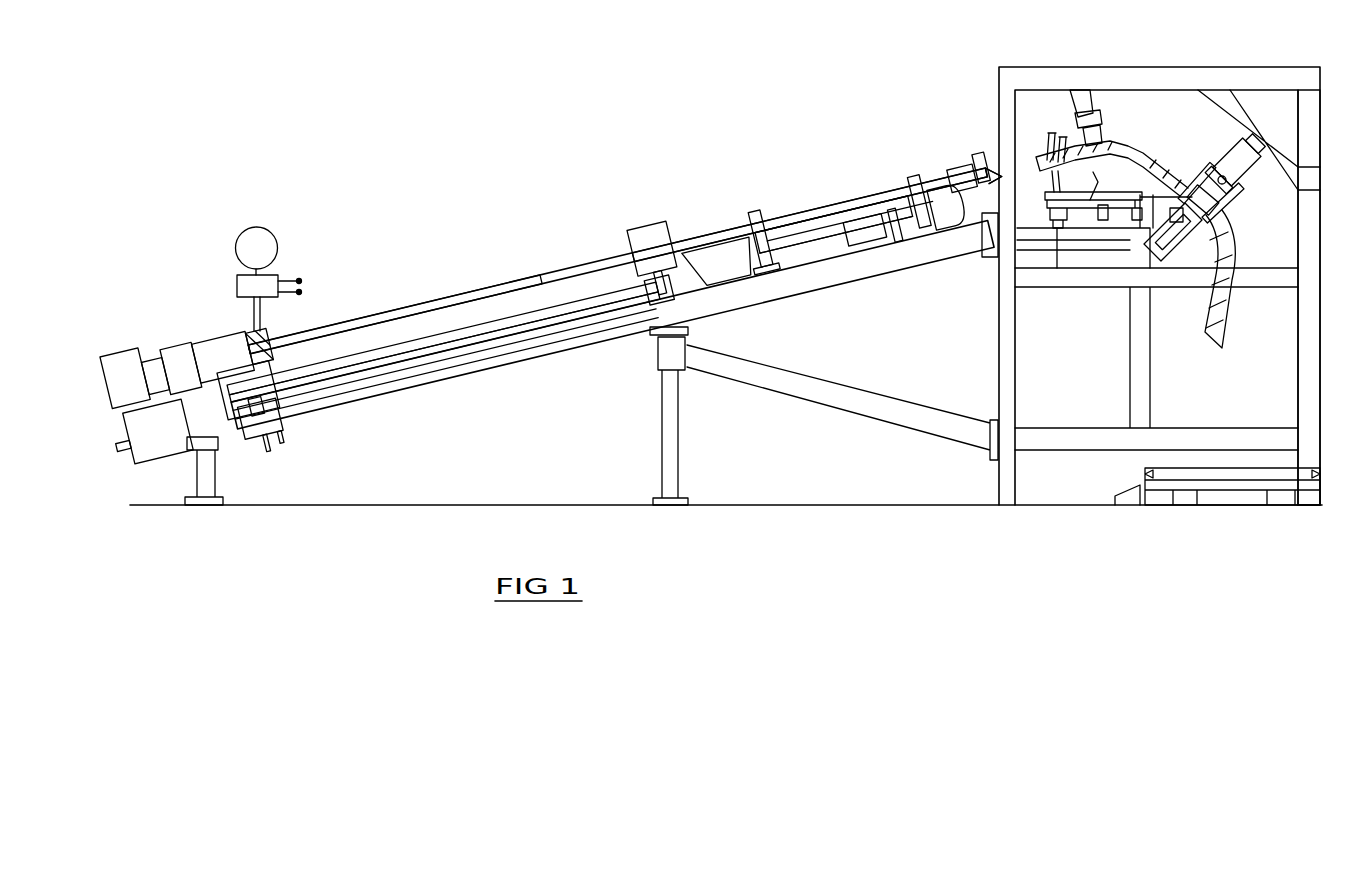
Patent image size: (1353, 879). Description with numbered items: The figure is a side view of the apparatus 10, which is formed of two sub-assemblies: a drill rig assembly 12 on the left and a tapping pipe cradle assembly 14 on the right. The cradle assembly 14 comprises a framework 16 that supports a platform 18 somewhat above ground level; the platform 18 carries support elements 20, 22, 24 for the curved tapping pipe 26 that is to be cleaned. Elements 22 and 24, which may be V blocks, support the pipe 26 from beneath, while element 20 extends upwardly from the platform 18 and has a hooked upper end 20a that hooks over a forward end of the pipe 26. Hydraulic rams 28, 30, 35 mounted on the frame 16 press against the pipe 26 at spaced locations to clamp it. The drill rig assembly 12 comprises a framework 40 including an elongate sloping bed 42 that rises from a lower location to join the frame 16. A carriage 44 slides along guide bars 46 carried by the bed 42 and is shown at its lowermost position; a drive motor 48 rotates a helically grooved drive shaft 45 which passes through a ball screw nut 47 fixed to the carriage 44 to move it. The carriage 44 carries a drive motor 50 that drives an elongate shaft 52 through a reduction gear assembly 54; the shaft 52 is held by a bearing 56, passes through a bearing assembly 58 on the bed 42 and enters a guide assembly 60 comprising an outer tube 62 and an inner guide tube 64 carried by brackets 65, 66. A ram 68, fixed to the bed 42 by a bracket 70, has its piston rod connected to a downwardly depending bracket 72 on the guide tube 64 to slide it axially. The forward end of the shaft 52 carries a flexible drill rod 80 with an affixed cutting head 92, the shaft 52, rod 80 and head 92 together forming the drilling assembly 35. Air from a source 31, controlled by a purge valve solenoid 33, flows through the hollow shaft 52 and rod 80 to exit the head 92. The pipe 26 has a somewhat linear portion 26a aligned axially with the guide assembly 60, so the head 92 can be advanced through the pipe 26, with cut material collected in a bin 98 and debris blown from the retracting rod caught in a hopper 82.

The apparatus 10 is at (651, 150).
The drill rig assembly 12 is at (385, 295).
The tapping pipe cradle assembly 14 is at (1323, 128).
The framework 16 is at (1312, 232).
The platform 18 is at (1090, 185).
The support element 20 is at (1040, 184).
The hooked upper end 20a is at (1036, 150).
The support element 22 is at (1128, 170).
The support element 24 is at (1172, 252).
The tapping pipe 26 is at (1222, 332).
The pipe portion 26a is at (1096, 178).
The hydraulic ram 28 is at (1085, 106).
The hydraulic ram 30 is at (1243, 158).
The source of air under pressure 31 is at (255, 226).
The purge valve solenoid 33 is at (236, 276).
The drilling assembly / hydraulic ram 35 is at (548, 266).
The framework 40 is at (775, 308).
The sloping bed 42 is at (717, 310).
The carriage 44 is at (268, 388).
The drive shaft 45 is at (385, 377).
The guide bars 46 is at (455, 347).
The ball screw nut 47 is at (262, 412).
The drive motor 48 is at (152, 432).
The drive motor 50 is at (128, 365).
The elongate shaft 52 is at (433, 302).
The reduction gear assembly 54 is at (221, 350).
The bearing 56 is at (270, 340).
The bearing assembly 58 is at (656, 238).
The guide assembly 60 is at (794, 198).
The outer tube 62 is at (843, 208).
The inner guide tube 64 is at (958, 166).
The bracket 65 is at (756, 220).
The bracket 66 is at (914, 186).
The ram 68 is at (862, 234).
The bracket 70 is at (898, 237).
The bracket 72 is at (935, 226).
The flexible drill rod 80 is at (955, 178).
The hopper 82 is at (720, 256).
The cutting head 92 is at (990, 170).
The bin 98 is at (1228, 490).